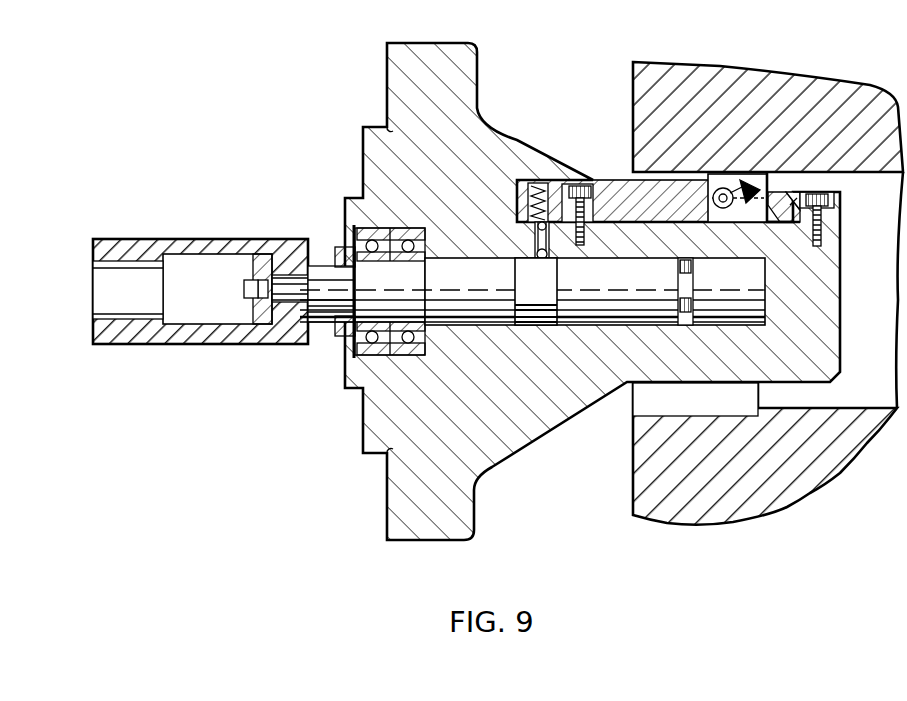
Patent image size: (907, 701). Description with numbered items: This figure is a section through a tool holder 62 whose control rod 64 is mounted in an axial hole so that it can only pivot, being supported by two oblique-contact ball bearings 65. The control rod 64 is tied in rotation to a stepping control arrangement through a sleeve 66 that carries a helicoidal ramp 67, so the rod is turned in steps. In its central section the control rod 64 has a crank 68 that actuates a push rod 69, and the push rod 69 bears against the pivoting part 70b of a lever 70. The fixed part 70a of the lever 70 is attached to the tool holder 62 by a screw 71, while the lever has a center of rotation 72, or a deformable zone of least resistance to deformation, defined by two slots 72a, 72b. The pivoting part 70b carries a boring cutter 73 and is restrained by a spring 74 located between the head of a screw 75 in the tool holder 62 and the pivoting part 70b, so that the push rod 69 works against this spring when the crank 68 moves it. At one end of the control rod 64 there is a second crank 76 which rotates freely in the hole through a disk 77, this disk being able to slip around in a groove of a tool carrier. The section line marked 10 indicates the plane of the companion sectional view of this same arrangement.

The section line for FIG. 10 is at (681, 143).
The tool holder 62 is at (507, 417).
The control rod 64 is at (495, 297).
The oblique-contact ball bearings 65 is at (358, 350).
The sleeve 66 is at (226, 336).
The helicoidal ramp 67 is at (128, 316).
The crank 68 is at (550, 297).
The push rod 69 is at (537, 248).
The lever 70 is at (679, 173).
The fixed part of the lever 70a is at (834, 200).
The pivoting part of the lever 70b is at (657, 196).
The screw 71 is at (834, 224).
The center of rotation 72 is at (776, 218).
The slot 72a is at (788, 198).
The slot 72b is at (799, 218).
The boring cutter 73 is at (768, 158).
The spring 74 is at (592, 196).
The screw 75 is at (580, 188).
The second crank 76 is at (692, 305).
The disk 77 is at (692, 265).